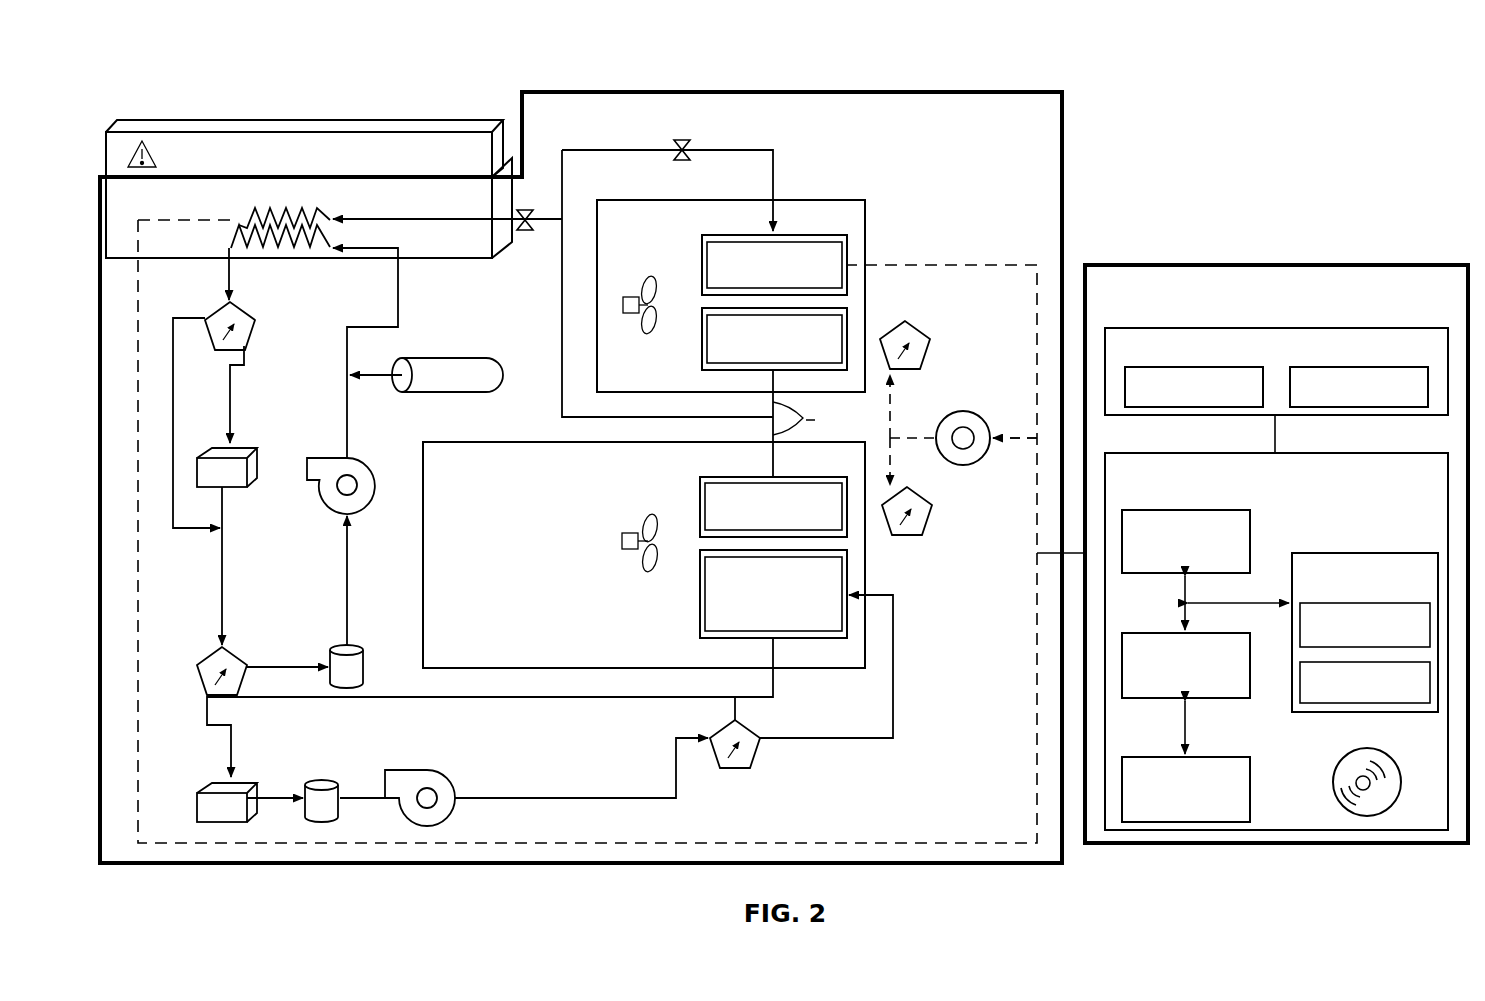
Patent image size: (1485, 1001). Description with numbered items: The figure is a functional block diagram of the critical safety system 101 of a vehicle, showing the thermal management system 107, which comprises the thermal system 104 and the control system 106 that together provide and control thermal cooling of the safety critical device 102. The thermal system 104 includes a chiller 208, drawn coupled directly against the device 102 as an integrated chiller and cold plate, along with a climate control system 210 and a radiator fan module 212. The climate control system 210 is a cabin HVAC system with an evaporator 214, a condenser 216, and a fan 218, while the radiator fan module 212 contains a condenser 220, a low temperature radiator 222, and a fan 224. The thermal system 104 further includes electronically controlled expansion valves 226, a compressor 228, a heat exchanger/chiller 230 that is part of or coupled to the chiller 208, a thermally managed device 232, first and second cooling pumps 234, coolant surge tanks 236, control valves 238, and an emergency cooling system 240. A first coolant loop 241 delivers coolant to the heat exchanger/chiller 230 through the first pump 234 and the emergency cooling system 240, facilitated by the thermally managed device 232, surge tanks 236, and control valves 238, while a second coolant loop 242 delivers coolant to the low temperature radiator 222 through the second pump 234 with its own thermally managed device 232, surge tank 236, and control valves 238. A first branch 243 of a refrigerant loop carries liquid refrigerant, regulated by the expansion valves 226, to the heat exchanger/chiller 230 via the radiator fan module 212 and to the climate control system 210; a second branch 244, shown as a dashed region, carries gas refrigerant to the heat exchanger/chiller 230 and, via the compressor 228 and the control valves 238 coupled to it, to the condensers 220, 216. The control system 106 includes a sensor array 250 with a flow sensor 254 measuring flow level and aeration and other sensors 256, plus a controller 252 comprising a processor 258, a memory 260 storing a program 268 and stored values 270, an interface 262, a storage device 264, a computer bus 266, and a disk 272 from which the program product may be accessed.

The critical safety system 101 is at (190, 86).
The device 102 is at (327, 140).
The thermal system 104 is at (918, 92).
The control system 106 is at (1133, 265).
The thermal management system 107 is at (1048, 73).
The chiller 208 is at (495, 243).
The climate control system 210 is at (820, 200).
The radiator fan module 212 is at (423, 460).
The evaporator 214 is at (848, 240).
The condenser 216 is at (850, 315).
The fan 218 is at (650, 335).
The condenser 220 is at (700, 505).
The low temperature radiator 222 is at (700, 595).
The fan 224 is at (640, 558).
The electronically controlled expansion valves 226 is at (688, 162).
The compressor 228 is at (965, 410).
The heat exchanger/chiller 230 is at (280, 253).
The thermally managed device 232 is at (255, 470).
The cooling pumps 234 is at (343, 497).
The coolant surge tanks 236 is at (362, 665).
The control valves 238 is at (253, 330).
The emergency cooling system 240 is at (470, 392).
The first coolant loop 241 is at (228, 268).
The second coolant loop 242 is at (207, 705).
The first branch of refrigerant loop 243 is at (590, 150).
The second branch of refrigerant loop 244 is at (957, 265).
The sensor array 250 is at (1157, 328).
The controller 252 is at (1380, 453).
The flow sensor 254 is at (1175, 367).
The other sensors 256 is at (1365, 367).
The processor 258 is at (1170, 510).
The memory 260 is at (1340, 553).
The interface 262 is at (1210, 633).
The storage device 264 is at (1210, 757).
The computer bus 266 is at (1183, 612).
The program 268 is at (1300, 625).
The stored values 270 is at (1323, 712).
The disk 272 is at (1333, 782).